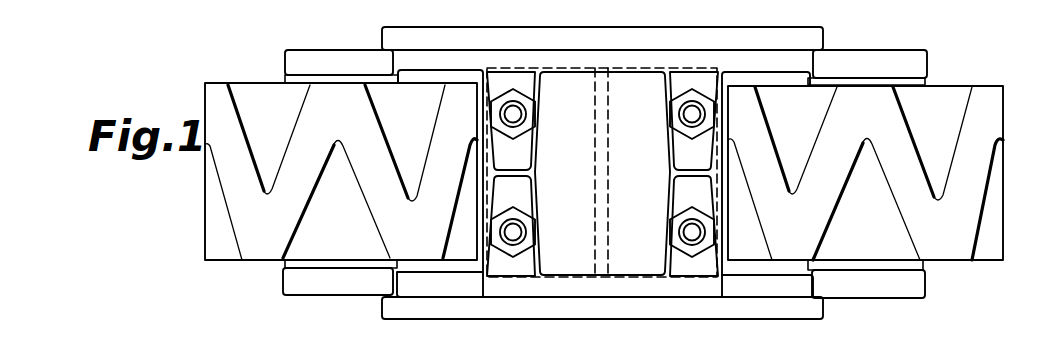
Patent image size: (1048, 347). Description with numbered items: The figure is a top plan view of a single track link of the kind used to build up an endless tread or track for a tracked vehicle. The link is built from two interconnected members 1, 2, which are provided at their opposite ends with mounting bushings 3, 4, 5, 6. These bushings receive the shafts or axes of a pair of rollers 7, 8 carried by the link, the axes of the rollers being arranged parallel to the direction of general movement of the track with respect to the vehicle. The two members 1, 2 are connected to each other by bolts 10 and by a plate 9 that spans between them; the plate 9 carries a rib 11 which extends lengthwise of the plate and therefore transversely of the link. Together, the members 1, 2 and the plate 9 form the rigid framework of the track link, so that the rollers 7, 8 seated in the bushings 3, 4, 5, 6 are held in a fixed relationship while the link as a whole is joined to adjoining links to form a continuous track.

The member 1 is at (570, 320).
The member 2 is at (408, 26).
The mounting bushing 3 is at (303, 280).
The mounting bushing 4 is at (875, 283).
The mounting bushing 5 is at (307, 53).
The mounting bushing 6 is at (897, 60).
The roller 7 is at (268, 222).
The roller 8 is at (978, 115).
The plate 9 is at (651, 124).
The bolt 10 is at (513, 232).
The rib 11 is at (599, 188).